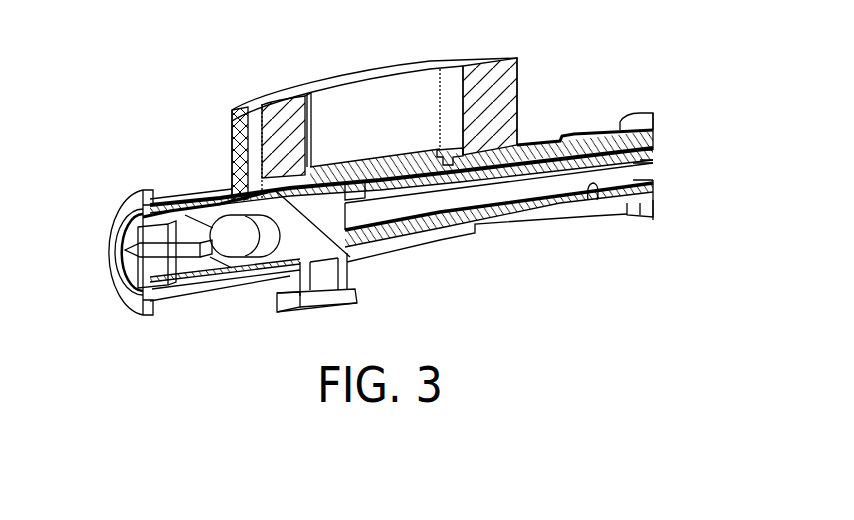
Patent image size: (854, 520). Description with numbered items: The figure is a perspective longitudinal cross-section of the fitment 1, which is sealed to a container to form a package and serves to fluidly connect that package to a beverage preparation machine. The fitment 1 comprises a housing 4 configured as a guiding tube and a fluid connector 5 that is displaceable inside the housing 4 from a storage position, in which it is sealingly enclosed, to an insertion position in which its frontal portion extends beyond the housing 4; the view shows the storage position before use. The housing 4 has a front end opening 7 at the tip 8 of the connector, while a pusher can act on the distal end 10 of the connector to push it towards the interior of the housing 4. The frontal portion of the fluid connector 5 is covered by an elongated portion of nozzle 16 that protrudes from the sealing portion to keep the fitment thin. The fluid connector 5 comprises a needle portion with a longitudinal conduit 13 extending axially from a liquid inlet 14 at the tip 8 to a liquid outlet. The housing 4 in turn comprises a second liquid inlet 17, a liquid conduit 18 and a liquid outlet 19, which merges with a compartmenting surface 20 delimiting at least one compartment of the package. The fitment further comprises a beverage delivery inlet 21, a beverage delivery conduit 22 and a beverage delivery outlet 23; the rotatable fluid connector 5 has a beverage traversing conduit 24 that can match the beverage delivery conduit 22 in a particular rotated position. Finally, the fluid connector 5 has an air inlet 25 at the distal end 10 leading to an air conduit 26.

The fitment 1 is at (48, 92).
The housing 4 is at (532, 220).
The fluid connector 5 is at (407, 228).
The front end opening 7 is at (652, 155).
The tip 8 is at (650, 188).
The distal end 10 is at (132, 270).
The longitudinal conduit 13 is at (590, 186).
The liquid inlet 14 is at (637, 168).
The portion of nozzle 16 is at (523, 115).
The second liquid inlet 17 is at (477, 89).
The liquid conduit 18 is at (450, 156).
The liquid outlet 19 is at (452, 152).
The compartmenting surface 20 is at (280, 92).
The beverage delivery inlet 21 is at (307, 168).
The beverage delivery conduit 22 is at (317, 187).
The beverage delivery outlet 23 is at (328, 291).
The beverage traversing conduit 24 is at (237, 245).
The air inlet 25 is at (182, 288).
The air conduit 26 is at (192, 262).